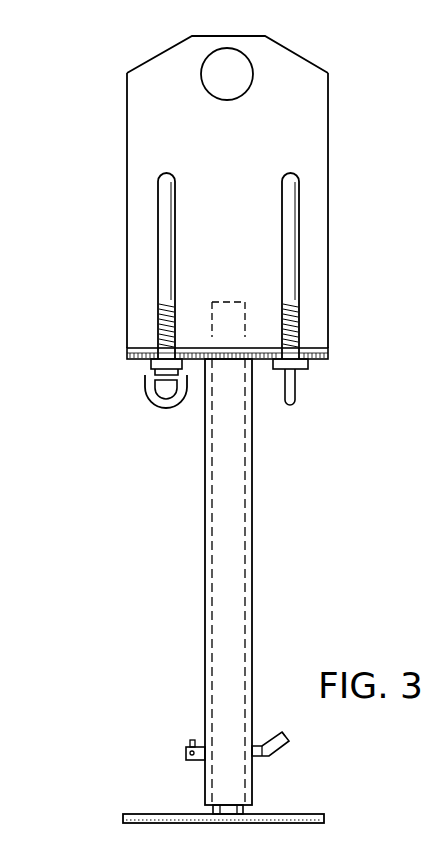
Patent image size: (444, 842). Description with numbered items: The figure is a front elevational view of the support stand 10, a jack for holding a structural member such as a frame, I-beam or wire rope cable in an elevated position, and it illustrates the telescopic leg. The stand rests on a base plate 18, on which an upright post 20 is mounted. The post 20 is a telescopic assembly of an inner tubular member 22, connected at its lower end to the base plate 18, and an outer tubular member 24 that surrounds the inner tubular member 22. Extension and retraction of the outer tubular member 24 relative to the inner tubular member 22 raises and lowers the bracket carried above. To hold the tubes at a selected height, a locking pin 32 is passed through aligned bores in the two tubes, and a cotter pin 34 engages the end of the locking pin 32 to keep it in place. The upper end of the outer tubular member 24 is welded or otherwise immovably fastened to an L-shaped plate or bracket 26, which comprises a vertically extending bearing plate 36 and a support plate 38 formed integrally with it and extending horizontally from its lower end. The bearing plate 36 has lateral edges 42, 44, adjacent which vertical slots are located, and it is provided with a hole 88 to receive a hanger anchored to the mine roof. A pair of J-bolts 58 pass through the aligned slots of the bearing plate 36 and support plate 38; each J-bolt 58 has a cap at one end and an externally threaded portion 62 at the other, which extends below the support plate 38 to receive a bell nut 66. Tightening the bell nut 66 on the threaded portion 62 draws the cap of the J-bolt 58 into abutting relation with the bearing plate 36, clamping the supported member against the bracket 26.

The support stand 10 is at (102, 176).
The base plate 18 is at (175, 814).
The upright post 20 is at (174, 516).
The inner tubular member 22 is at (244, 808).
The outer tubular member 24 is at (205, 582).
The L-shaped plate or bracket 26 is at (339, 103).
The locking pin 32 is at (291, 750).
The cotter pin 34 is at (192, 741).
The bearing plate 36 is at (127, 97).
The support plate 38 is at (328, 356).
The lateral edge 42 is at (127, 135).
The lateral edge 44 is at (328, 157).
The J-bolt 58 is at (161, 242).
The externally threaded portion 62 is at (160, 322).
The bell nut 66 is at (145, 395).
The hole 88 is at (206, 80).